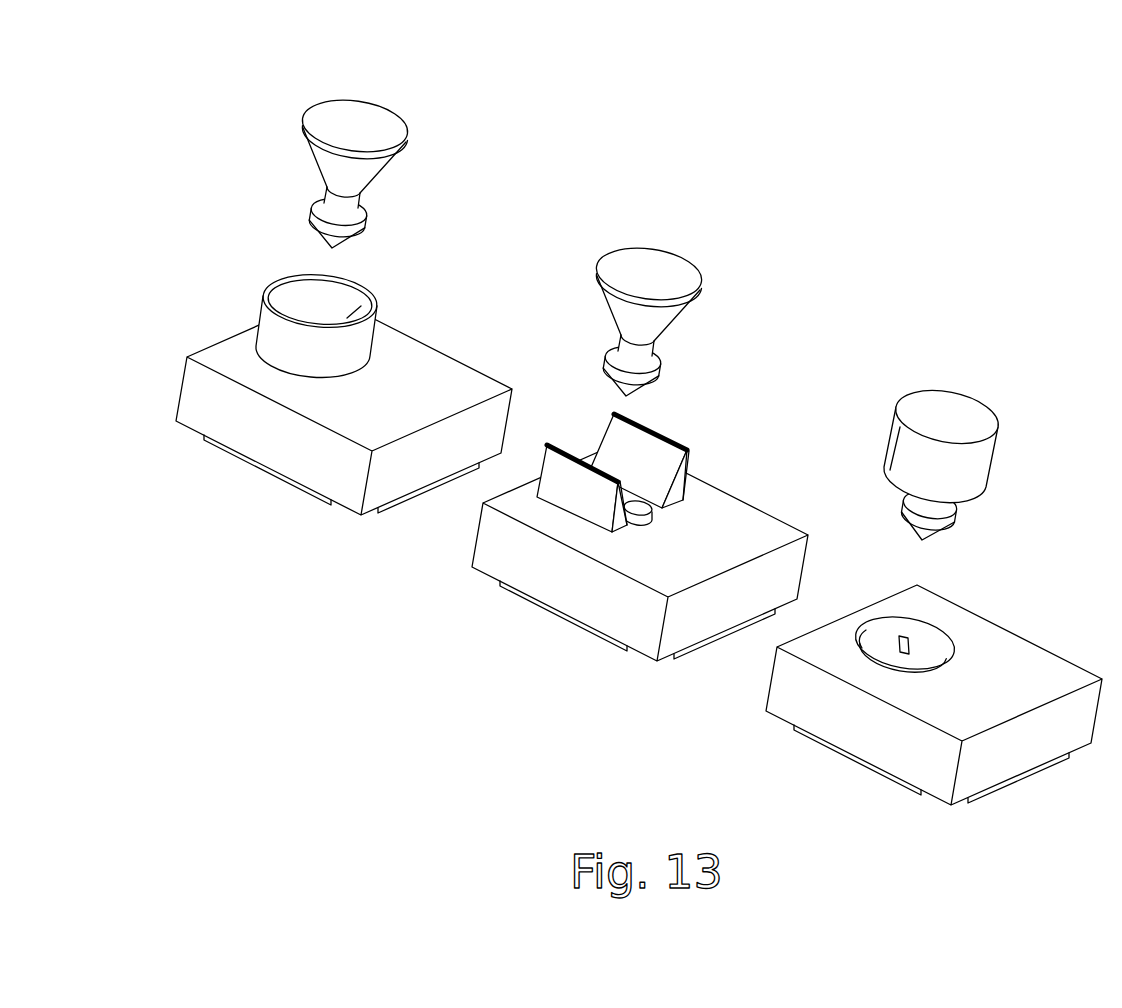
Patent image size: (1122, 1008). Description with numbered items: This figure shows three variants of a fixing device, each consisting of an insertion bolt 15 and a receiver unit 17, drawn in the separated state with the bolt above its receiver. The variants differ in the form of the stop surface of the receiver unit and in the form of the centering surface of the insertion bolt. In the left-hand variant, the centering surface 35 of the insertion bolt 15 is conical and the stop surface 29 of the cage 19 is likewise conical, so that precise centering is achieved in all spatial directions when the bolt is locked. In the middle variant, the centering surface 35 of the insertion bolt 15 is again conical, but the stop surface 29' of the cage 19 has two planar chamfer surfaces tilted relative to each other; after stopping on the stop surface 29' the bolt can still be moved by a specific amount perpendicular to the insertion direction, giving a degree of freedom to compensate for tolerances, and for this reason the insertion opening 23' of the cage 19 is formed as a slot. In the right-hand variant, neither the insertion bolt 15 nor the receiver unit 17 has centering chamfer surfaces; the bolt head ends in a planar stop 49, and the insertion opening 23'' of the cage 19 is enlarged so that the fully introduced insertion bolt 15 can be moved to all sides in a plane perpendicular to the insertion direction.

The insertion bolt 15 is at (353, 127).
The receiver unit 17 is at (210, 467).
The cage 19 is at (440, 397).
The stop surface 29 is at (307, 291).
The stop surface 29' is at (654, 437).
The insertion opening 23' is at (620, 606).
The insertion opening 23'' is at (903, 723).
The centering surface 35 is at (396, 162).
The planar stop 49 is at (975, 508).